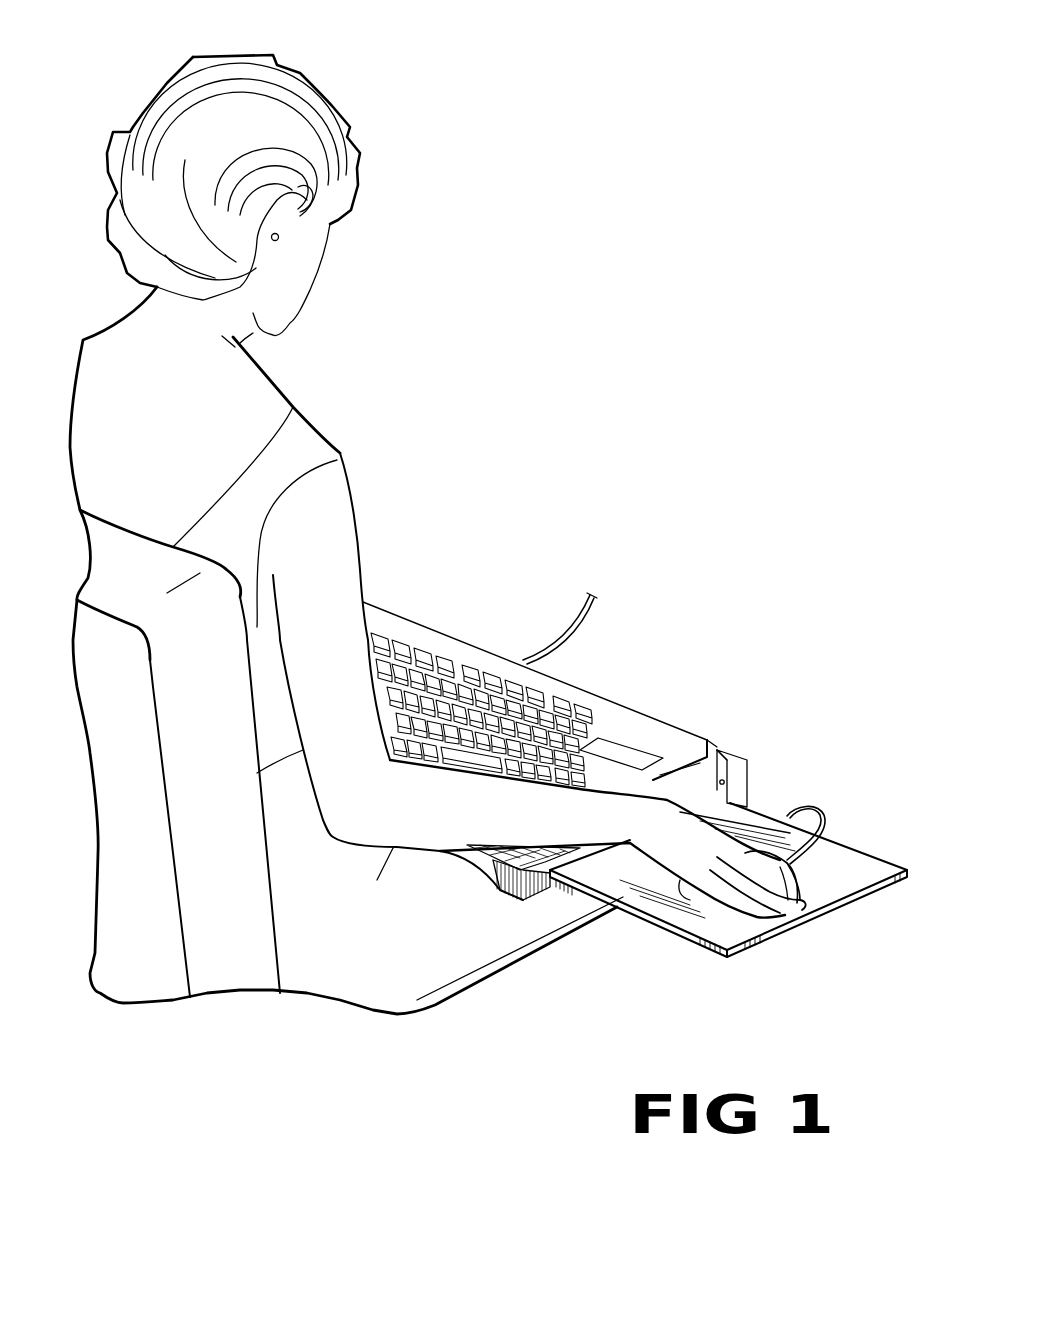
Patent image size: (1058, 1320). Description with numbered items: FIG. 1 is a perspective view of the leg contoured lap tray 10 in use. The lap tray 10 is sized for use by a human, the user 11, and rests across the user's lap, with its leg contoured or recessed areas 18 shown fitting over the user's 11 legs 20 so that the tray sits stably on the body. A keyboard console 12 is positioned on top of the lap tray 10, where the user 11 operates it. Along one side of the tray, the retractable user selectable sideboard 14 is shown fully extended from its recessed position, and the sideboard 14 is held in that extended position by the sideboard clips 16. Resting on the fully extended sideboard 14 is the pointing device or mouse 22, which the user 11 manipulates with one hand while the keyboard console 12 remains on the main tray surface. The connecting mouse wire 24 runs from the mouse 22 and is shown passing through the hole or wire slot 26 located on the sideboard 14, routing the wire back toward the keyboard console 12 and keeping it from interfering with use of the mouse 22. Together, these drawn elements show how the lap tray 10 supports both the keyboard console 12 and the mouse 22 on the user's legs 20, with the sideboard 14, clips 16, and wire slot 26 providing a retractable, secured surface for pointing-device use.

The leg contoured lap tray 10 is at (720, 754).
The user 11 is at (329, 436).
The keyboard console 12 is at (553, 690).
The retractable user selectable sideboard 14 is at (863, 865).
The sideboard clips 16 is at (727, 797).
The leg contoured recessed areas 18 is at (455, 857).
The legs 20 is at (538, 928).
The pointing device or mouse 22 is at (783, 862).
The mouse wire 24 is at (828, 827).
The wire slot 26 is at (781, 832).